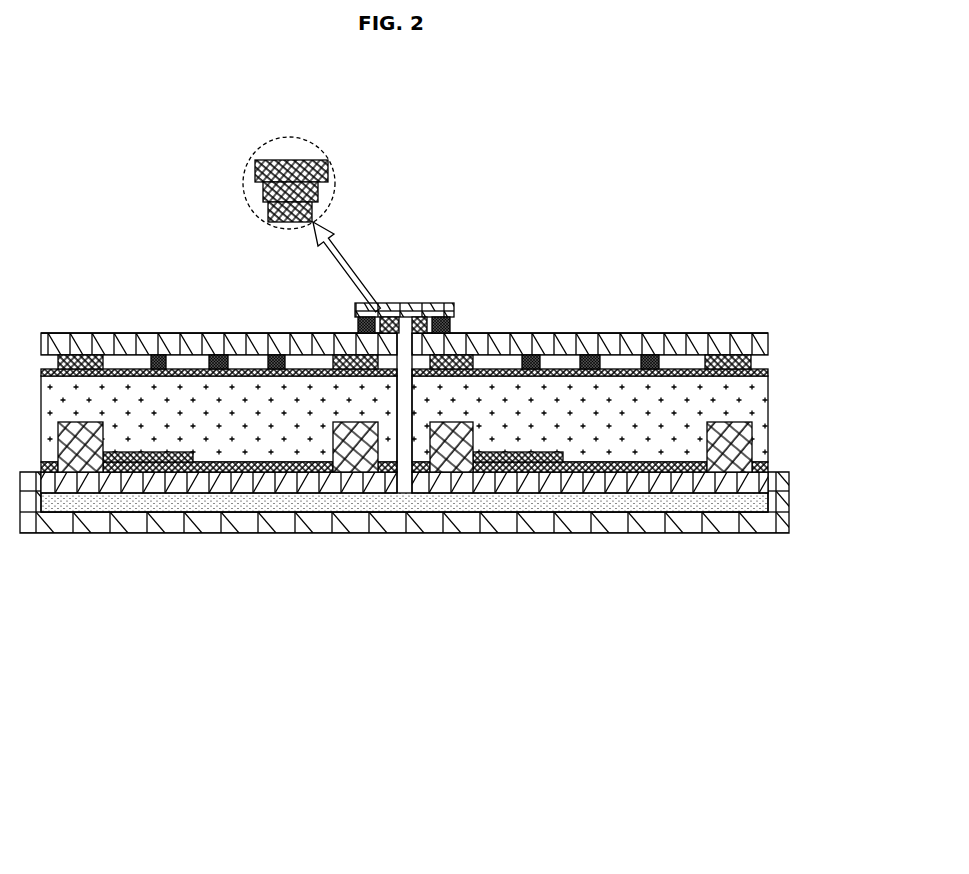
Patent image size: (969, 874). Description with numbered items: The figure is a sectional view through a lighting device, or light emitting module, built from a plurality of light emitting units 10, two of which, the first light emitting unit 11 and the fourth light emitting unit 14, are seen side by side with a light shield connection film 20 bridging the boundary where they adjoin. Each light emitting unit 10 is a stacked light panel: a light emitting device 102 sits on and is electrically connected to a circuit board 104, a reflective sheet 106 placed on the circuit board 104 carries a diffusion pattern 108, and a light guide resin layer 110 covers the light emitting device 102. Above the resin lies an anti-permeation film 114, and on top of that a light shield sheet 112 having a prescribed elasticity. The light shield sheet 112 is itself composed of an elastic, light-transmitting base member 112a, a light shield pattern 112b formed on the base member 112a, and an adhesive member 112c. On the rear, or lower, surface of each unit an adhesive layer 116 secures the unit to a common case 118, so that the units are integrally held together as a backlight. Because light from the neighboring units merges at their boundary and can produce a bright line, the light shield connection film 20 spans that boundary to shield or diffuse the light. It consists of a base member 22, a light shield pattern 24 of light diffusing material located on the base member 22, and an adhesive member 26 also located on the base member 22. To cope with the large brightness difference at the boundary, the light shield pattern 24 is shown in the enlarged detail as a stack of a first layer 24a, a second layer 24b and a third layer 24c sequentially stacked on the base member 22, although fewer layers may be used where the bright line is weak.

The light emitting unit 10 is at (457, 672).
The first light emitting unit 11 is at (301, 555).
The fourth light emitting unit 14 is at (477, 555).
The light shield connection film 20 is at (322, 226).
The base member 22 is at (414, 306).
The light shield pattern 24 is at (424, 322).
The first layer 24a is at (262, 175).
The second layer 24b is at (265, 192).
The third layer 24c is at (272, 215).
The adhesive member 26 is at (445, 322).
The light emitting device 102 is at (748, 443).
The circuit board 104 is at (752, 485).
The reflective sheet 106 is at (638, 470).
The diffusion pattern 108 is at (532, 458).
The light guide resin layer 110 is at (757, 405).
The light shield sheet 112 is at (434, 288).
The base member 112a is at (693, 333).
The light shield pattern 112b is at (434, 312).
The adhesive member 112c is at (648, 333).
The anti-permeation film 114 is at (770, 372).
The adhesive layer 116 is at (752, 505).
The case 118 is at (770, 522).